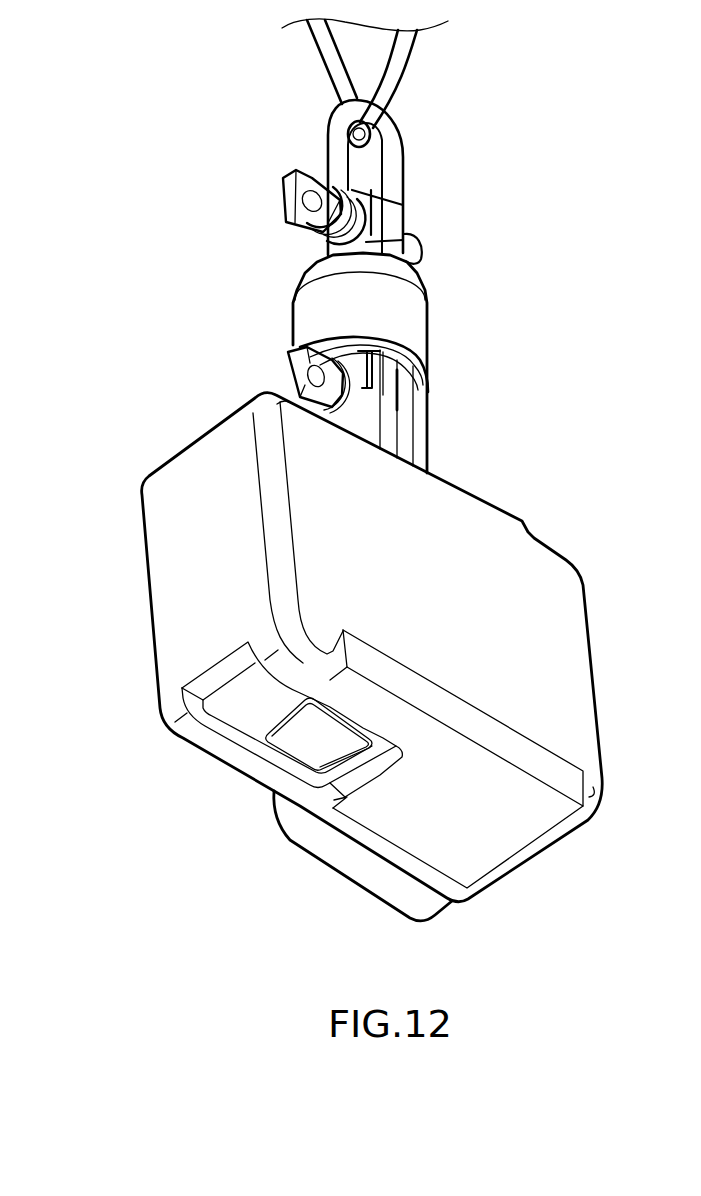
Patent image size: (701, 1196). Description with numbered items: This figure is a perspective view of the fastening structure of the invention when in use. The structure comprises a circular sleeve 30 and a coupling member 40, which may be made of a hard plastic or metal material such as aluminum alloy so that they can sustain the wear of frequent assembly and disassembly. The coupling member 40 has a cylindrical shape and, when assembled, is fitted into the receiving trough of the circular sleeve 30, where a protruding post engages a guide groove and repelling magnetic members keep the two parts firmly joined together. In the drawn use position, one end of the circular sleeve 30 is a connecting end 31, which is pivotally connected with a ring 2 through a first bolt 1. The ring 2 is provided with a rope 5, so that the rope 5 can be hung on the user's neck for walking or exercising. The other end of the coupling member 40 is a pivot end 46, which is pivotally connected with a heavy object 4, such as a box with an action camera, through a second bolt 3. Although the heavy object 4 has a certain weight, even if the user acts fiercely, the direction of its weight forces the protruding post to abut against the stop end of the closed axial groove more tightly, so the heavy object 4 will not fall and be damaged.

The first bolt 1 is at (300, 173).
The ring 2 is at (400, 162).
The second bolt 3 is at (290, 359).
The heavy object 4 is at (200, 470).
The rope 5 is at (398, 81).
The circular sleeve 30 is at (293, 289).
The connecting end 31 is at (410, 241).
The coupling member 40 is at (352, 348).
The pivot end 46 is at (362, 390).